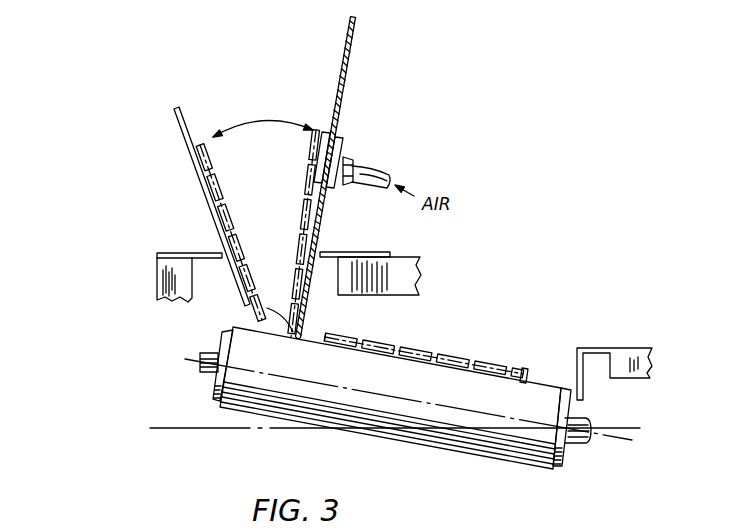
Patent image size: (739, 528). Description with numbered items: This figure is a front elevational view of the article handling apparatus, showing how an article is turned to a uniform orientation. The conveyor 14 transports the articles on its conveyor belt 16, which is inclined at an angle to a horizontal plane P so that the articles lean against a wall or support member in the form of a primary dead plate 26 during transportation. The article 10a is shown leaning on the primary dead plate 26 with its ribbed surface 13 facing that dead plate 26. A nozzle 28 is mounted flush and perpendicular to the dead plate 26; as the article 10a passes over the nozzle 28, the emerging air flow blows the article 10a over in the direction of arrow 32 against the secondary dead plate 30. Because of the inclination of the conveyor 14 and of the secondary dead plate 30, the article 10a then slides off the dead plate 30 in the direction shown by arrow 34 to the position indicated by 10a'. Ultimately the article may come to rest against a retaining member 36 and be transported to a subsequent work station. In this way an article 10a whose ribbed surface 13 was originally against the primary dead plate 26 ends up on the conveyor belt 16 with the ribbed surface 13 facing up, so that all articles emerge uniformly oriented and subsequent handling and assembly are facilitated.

The article 10a is at (263, 205).
The article in final position 10a' is at (429, 348).
The ribbed surface 13 is at (230, 211).
The conveyor 14 is at (404, 452).
The conveyor belt 16 is at (525, 436).
The primary dead plate 26 is at (352, 41).
The nozzle 28 is at (337, 147).
The secondary dead plate 30 is at (173, 110).
The arrow 32 is at (242, 126).
The arrow 34 is at (310, 333).
The retaining member 36 is at (607, 347).
The horizontal plane P is at (183, 429).